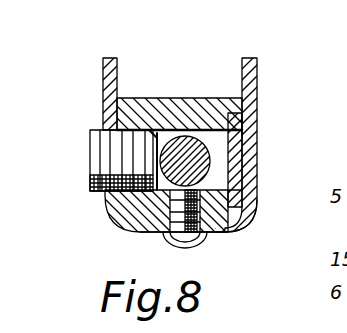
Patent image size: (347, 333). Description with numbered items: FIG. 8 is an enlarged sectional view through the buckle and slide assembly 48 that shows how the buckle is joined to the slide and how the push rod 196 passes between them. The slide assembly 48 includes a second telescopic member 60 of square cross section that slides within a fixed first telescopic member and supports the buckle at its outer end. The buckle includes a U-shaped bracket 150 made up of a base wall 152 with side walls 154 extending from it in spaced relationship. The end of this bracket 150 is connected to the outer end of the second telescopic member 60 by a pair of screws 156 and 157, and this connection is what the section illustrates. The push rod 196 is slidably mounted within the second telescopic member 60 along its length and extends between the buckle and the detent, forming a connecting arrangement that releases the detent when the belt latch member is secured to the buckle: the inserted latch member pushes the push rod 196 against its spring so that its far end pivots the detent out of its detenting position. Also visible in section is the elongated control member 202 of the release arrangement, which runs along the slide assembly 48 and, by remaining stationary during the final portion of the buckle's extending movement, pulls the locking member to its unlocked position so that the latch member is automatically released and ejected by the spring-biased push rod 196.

The slide assembly 48 is at (259, 113).
The second telescopic member 60 is at (163, 104).
The U-shaped bracket 150 is at (223, 231).
The base wall 152 is at (125, 231).
The side walls 154 is at (108, 77).
The screw 156 is at (92, 185).
The screw 157 is at (172, 247).
The push rod 196 is at (210, 155).
The control member 202 is at (233, 137).